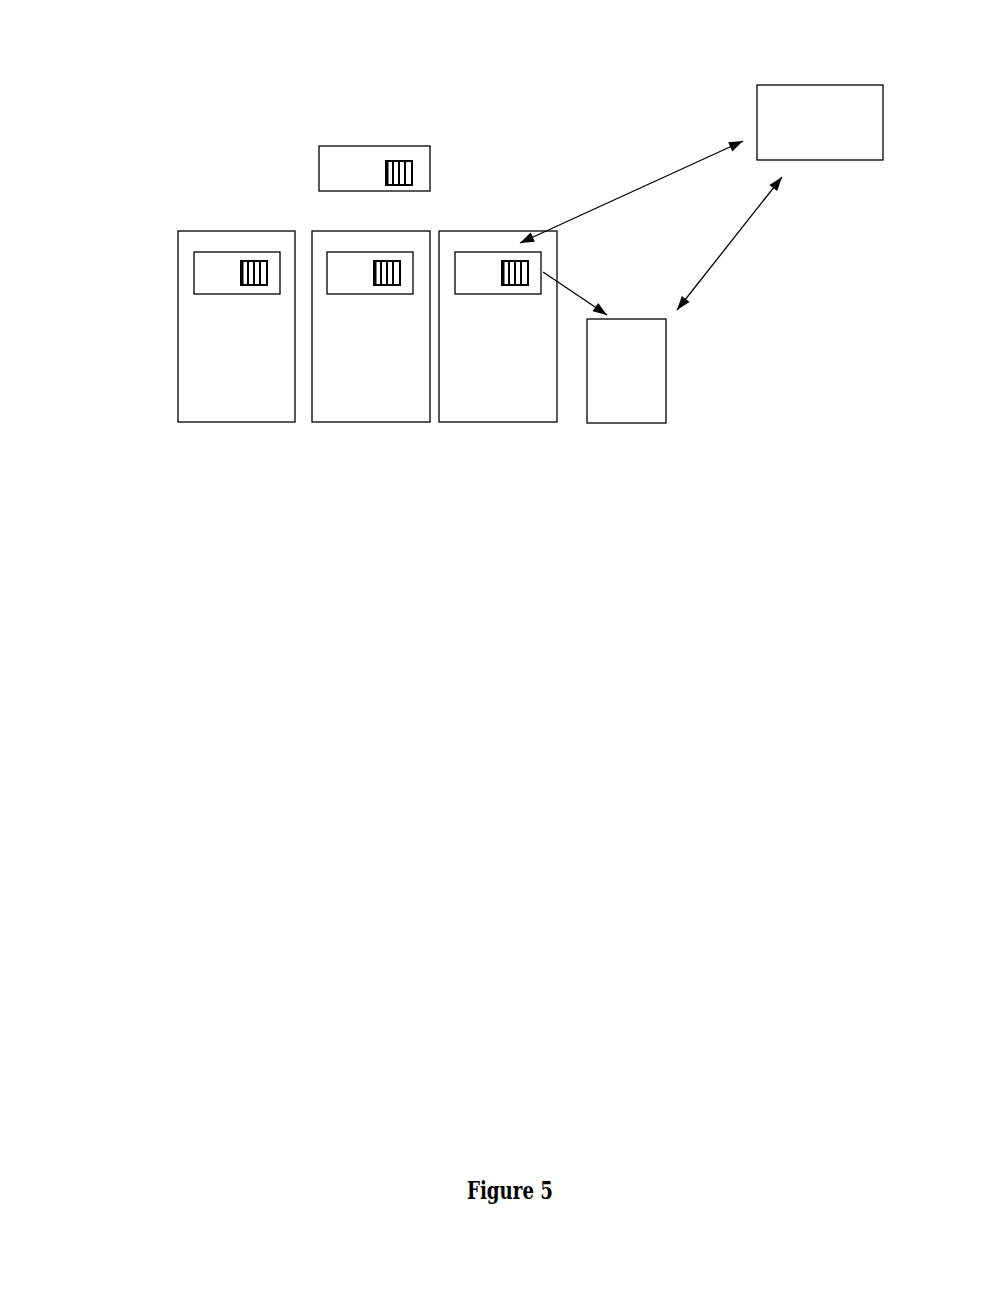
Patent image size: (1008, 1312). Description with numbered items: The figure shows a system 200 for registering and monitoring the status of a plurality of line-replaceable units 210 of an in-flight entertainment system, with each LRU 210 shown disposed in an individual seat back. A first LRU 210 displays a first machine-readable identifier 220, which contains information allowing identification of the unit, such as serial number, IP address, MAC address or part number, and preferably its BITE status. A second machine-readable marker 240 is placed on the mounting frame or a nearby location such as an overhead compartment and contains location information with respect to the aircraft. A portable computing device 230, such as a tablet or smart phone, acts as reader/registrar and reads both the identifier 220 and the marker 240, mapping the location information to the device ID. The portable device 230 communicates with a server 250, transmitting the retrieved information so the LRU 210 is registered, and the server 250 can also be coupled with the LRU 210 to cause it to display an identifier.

The system 200 is at (461, 271).
The line-replaceable unit 210 is at (367, 323).
The first machine-readable identifier 220 is at (448, 392).
The portable computing device 230 is at (626, 371).
The second machine-readable marker 240 is at (373, 117).
The server 250 is at (820, 122).